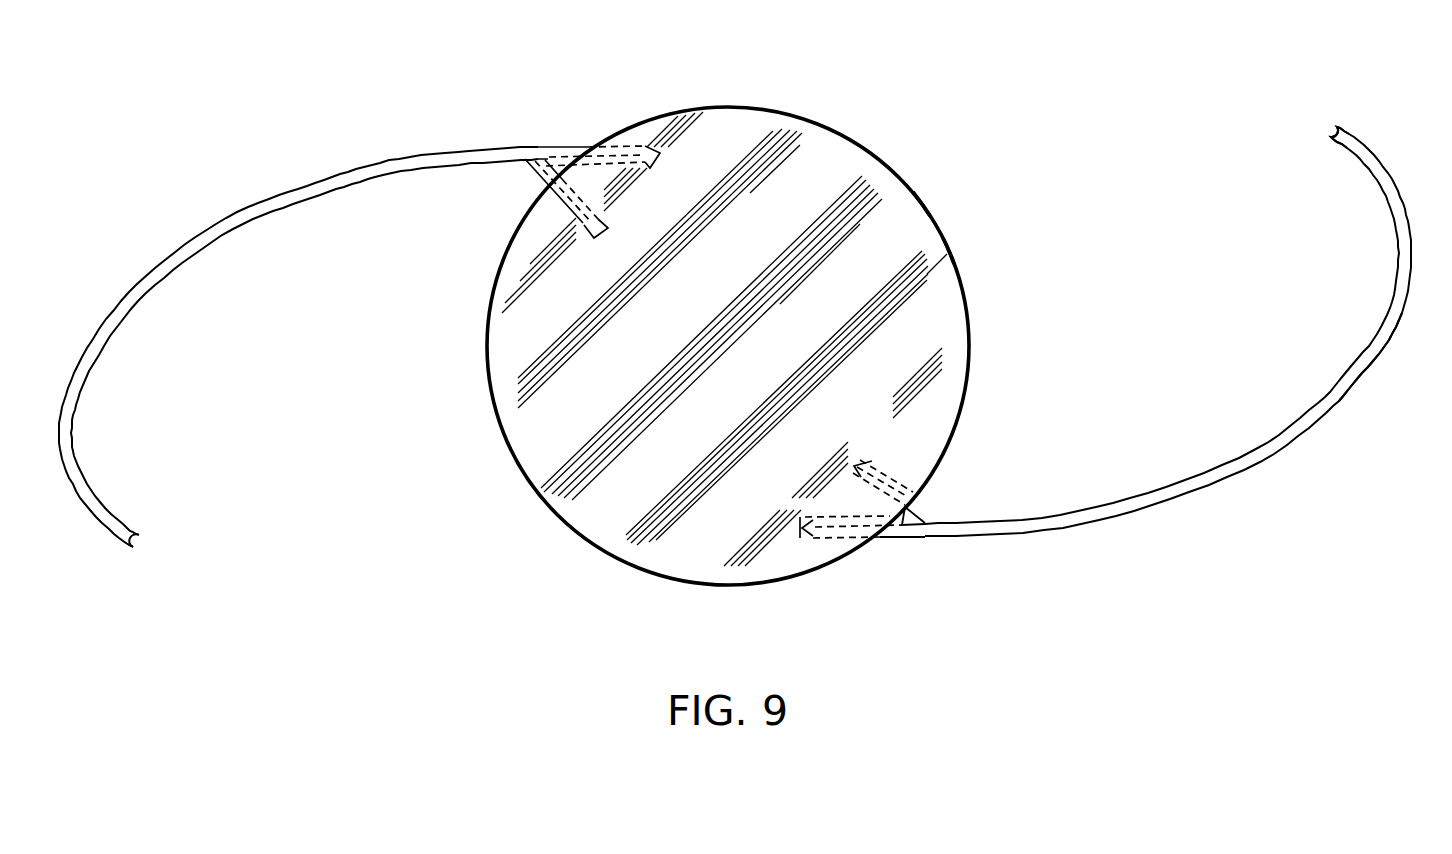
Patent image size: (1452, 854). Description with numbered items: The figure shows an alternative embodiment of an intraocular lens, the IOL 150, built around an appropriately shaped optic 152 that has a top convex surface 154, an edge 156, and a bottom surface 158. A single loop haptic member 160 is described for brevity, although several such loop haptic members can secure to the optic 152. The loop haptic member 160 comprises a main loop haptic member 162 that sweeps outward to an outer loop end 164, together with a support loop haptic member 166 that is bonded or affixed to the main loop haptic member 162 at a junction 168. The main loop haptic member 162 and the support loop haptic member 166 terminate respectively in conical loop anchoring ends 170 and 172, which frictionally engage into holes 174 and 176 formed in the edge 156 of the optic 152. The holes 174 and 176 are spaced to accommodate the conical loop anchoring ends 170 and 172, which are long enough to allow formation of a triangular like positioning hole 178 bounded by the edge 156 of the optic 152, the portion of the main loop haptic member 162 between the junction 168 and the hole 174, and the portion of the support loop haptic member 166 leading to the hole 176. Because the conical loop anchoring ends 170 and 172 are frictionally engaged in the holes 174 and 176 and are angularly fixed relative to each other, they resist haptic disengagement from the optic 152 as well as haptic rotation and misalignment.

The IOL 150 is at (1040, 89).
The optic 152 is at (893, 167).
The top convex surface 154 is at (918, 220).
The edge 156 is at (952, 252).
The bottom surface 158 is at (936, 295).
The loop haptic member 160 is at (1296, 463).
The main loop haptic member 162 is at (1361, 383).
The outer loop end 164 is at (1328, 130).
The support loop haptic member 166 is at (927, 508).
The junction 168 is at (935, 528).
The conical loop anchoring end 170 is at (830, 538).
The conical loop anchoring end 172 is at (875, 463).
The hole 174 is at (803, 521).
The hole 176 is at (864, 455).
The triangular like positioning hole 178 is at (903, 520).